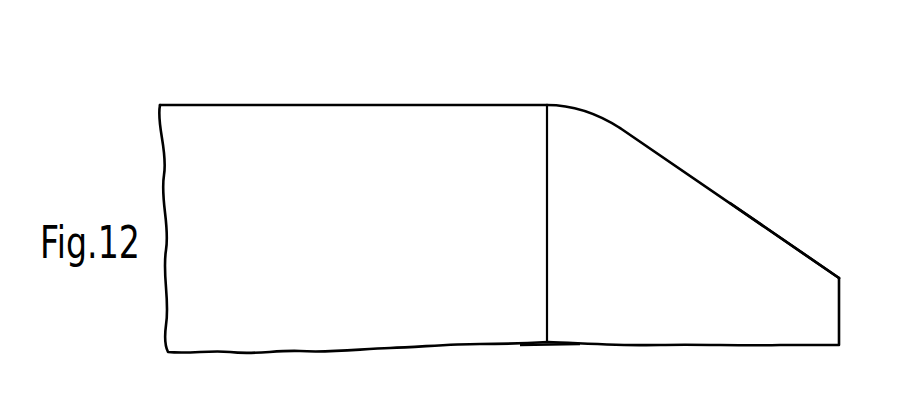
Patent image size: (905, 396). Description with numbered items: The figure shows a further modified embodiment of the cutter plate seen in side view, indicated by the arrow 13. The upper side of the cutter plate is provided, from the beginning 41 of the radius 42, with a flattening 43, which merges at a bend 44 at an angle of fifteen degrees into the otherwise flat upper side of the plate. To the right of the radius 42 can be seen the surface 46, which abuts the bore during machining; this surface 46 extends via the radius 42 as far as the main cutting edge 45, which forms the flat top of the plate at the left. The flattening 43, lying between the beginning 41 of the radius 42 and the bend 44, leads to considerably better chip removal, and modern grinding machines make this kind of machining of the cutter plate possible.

The direction of load / force arrow 13 is at (412, 70).
The beginning of the radius 41 is at (547, 105).
The radius 42 is at (597, 113).
The flattening 43 is at (664, 197).
The bend 44 is at (549, 292).
The main cutting edge 45 is at (249, 105).
The surface 46 is at (760, 217).